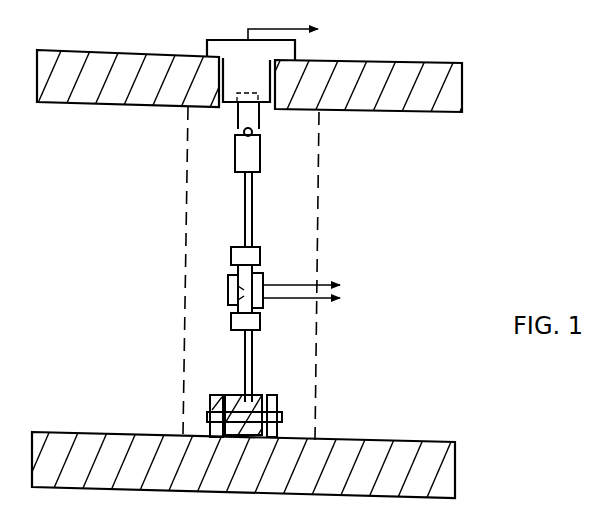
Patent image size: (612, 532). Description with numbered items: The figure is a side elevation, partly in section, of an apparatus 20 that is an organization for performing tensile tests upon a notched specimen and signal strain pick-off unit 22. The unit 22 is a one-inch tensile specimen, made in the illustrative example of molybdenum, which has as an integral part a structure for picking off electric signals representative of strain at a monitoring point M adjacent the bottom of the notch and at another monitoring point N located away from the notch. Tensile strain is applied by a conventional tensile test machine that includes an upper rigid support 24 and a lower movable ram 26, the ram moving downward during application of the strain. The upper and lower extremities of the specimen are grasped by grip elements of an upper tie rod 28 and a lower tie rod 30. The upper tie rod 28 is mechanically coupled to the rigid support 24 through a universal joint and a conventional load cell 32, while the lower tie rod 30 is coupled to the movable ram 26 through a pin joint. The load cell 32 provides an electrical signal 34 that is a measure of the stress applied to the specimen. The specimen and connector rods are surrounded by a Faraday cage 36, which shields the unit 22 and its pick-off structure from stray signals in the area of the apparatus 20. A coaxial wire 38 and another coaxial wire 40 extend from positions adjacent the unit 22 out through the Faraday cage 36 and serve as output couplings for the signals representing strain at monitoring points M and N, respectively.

The apparatus 20 is at (421, 246).
The signal strain pick-off unit 22 is at (228, 278).
The upper rigid support 24 is at (410, 66).
The lower movable ram 26 is at (398, 453).
The upper tie rod 28 is at (253, 208).
The lower tie rod 30 is at (252, 362).
The load cell 32 is at (216, 40).
The electrical signal 34 is at (286, 29).
The Faraday cage 36 is at (318, 172).
The coaxial wire 38 is at (295, 283).
The coaxial wire 40 is at (302, 300).
The monitoring point M is at (238, 290).
The monitoring point N is at (242, 302).